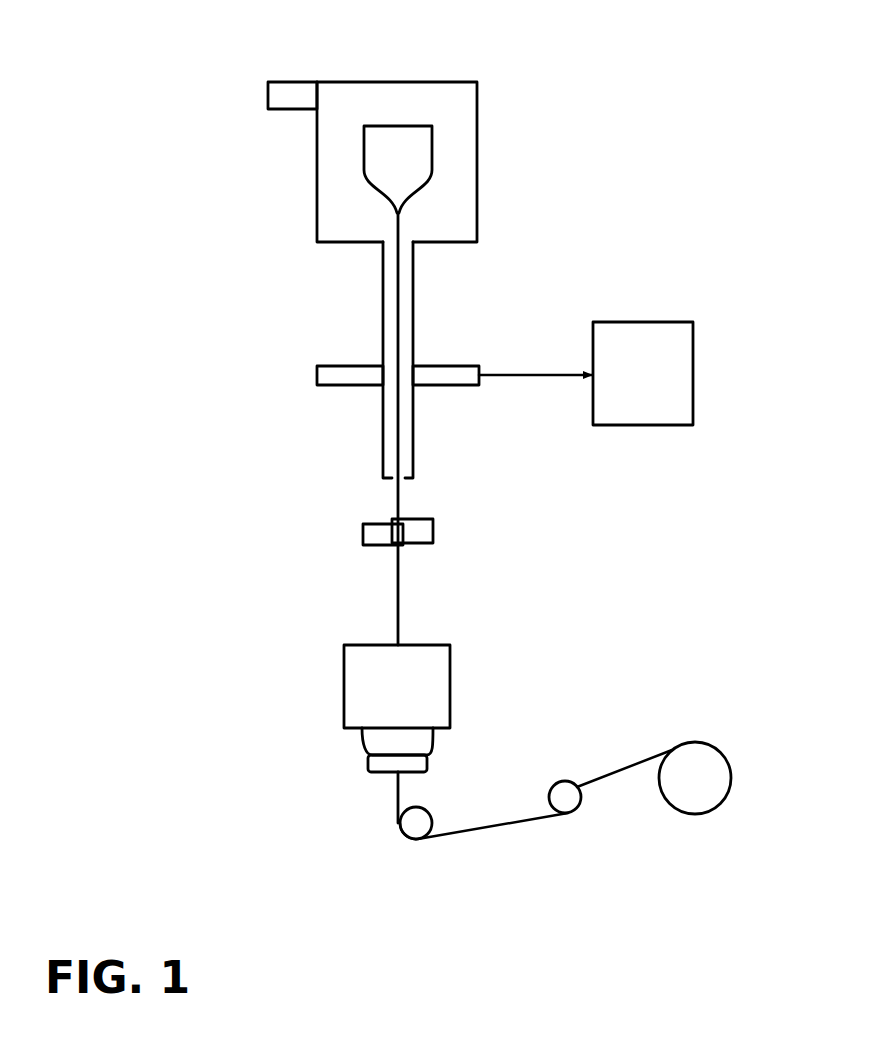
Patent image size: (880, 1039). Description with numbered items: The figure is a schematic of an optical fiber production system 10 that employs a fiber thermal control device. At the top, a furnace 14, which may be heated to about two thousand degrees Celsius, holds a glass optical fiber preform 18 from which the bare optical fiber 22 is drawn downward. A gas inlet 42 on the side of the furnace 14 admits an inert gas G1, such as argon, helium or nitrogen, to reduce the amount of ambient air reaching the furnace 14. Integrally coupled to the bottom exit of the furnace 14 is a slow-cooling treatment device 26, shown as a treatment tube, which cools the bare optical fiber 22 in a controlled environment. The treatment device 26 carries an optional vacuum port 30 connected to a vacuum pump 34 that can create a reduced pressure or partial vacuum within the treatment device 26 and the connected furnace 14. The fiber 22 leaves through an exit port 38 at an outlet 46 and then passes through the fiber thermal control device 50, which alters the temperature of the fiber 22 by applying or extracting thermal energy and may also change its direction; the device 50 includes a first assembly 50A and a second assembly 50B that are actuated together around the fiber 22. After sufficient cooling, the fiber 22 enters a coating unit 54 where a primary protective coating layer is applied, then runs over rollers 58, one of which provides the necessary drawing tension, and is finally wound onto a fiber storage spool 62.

The optical fiber production system 10 is at (536, 110).
The furnace 14 is at (450, 82).
The glass optical fiber preform 18 is at (432, 148).
The bare optical fiber 22 is at (397, 318).
The slow-cooling treatment device 26 is at (383, 269).
The vacuum port 30 is at (452, 366).
The vacuum pump 34 is at (655, 322).
The exit port 38 is at (393, 480).
The gas inlet 42 is at (268, 92).
The outlet 46 is at (367, 478).
The fiber thermal control device 50 is at (447, 537).
The first assembly 50A is at (423, 519).
The second assembly 50B is at (373, 546).
The coating unit 54 is at (435, 645).
The rollers 58 is at (548, 802).
The fiber storage spool 62 is at (731, 775).
The inert gas G1 is at (250, 97).